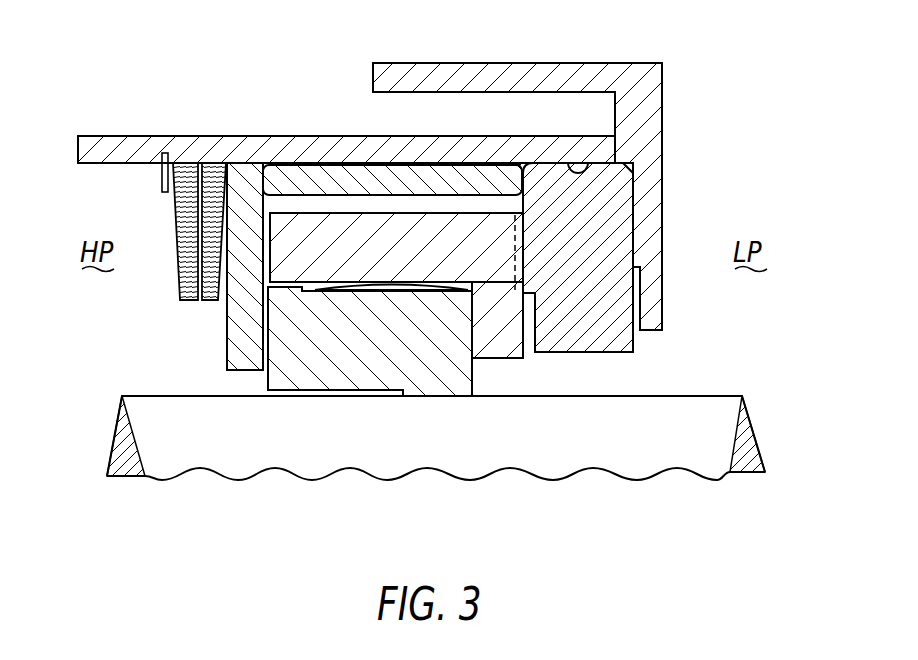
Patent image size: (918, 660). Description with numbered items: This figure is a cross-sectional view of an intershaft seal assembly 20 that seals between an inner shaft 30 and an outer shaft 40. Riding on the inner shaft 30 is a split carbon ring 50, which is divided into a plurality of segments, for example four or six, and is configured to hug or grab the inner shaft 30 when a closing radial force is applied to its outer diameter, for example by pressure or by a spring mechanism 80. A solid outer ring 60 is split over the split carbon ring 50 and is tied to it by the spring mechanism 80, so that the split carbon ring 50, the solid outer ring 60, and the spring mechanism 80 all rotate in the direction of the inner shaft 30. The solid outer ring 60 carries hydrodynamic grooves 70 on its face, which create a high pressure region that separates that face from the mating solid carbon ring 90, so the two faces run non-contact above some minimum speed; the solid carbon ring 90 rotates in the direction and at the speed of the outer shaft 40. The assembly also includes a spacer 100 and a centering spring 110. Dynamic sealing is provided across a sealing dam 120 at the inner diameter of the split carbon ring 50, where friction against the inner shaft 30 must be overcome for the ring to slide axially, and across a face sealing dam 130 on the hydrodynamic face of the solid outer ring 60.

The seal assembly 20 is at (693, 131).
The inner shaft 30 is at (636, 452).
The outer shaft 40 is at (473, 78).
The split carbon ring 50 is at (357, 347).
The solid outer ring 60 is at (498, 323).
The hydrodynamic grooves 70 is at (517, 258).
The spring mechanism 80 is at (358, 286).
The solid carbon ring 90 is at (592, 216).
The spacer 100 is at (318, 178).
The centering spring 110 is at (578, 168).
The sealing dam 120 is at (472, 403).
The face sealing dam 130 is at (528, 295).